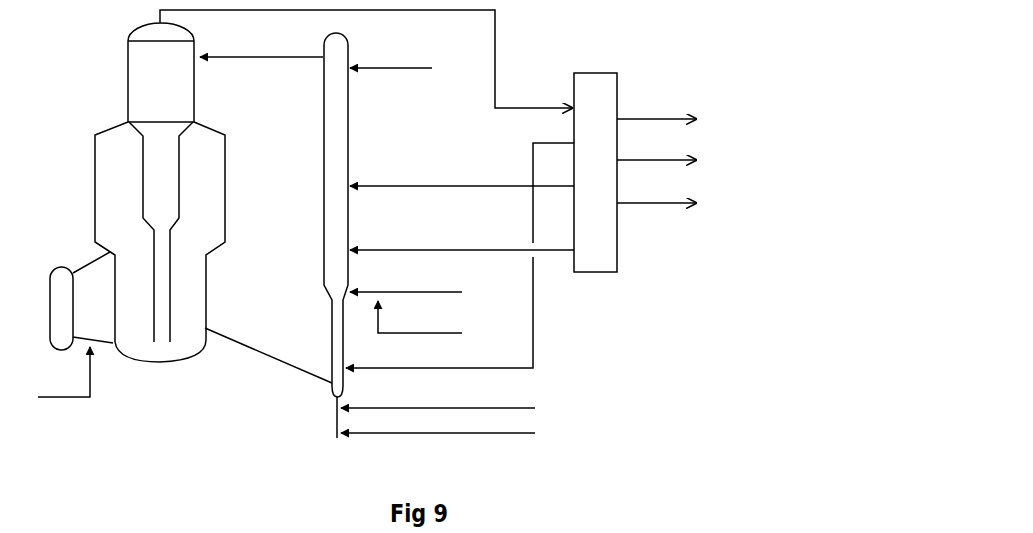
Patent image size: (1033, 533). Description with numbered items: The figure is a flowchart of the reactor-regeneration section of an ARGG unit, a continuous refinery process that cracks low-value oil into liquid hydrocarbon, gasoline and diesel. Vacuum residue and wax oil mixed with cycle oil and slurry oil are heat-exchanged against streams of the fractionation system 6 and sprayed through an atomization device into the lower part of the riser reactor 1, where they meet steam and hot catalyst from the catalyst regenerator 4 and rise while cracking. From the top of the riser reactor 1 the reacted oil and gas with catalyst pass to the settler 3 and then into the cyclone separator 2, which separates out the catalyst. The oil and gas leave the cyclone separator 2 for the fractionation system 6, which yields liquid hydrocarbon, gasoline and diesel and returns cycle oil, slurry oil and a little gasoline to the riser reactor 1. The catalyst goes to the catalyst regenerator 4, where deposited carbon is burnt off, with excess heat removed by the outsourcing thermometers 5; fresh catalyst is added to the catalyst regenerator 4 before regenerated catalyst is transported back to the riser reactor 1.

The riser reactor 1 is at (524, 241).
The cyclone separator 2 is at (350, 66).
The settler 3 is at (161, 232).
The catalyst regenerator 4 is at (213, 252).
The outsourcing thermometers 5 is at (79, 336).
The fractionation system 6 is at (604, 222).